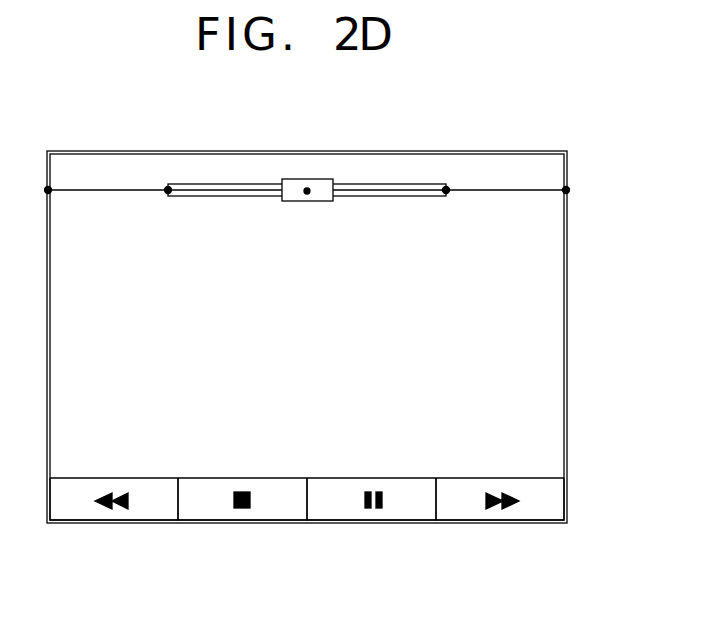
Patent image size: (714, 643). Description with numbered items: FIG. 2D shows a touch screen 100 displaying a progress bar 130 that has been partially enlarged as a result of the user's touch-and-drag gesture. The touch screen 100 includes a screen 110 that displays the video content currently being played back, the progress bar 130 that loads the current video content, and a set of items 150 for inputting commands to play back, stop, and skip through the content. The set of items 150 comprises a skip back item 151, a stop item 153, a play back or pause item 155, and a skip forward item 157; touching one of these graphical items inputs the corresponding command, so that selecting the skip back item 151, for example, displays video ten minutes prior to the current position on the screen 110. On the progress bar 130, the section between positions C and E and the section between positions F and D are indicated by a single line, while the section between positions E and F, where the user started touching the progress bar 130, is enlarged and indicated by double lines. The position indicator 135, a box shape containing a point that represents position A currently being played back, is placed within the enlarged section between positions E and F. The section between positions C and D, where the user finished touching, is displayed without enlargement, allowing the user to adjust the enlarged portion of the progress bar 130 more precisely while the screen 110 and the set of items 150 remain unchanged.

The touch screen 100 is at (307, 299).
The screen 110 is at (520, 311).
The progress bar 130 is at (478, 188).
The position indicator 135 is at (320, 184).
The set of items 150 is at (468, 478).
The skip back item 151 is at (117, 520).
The stop item 153 is at (233, 520).
The play back or pause item 155 is at (371, 520).
The skip forward item 157 is at (498, 520).